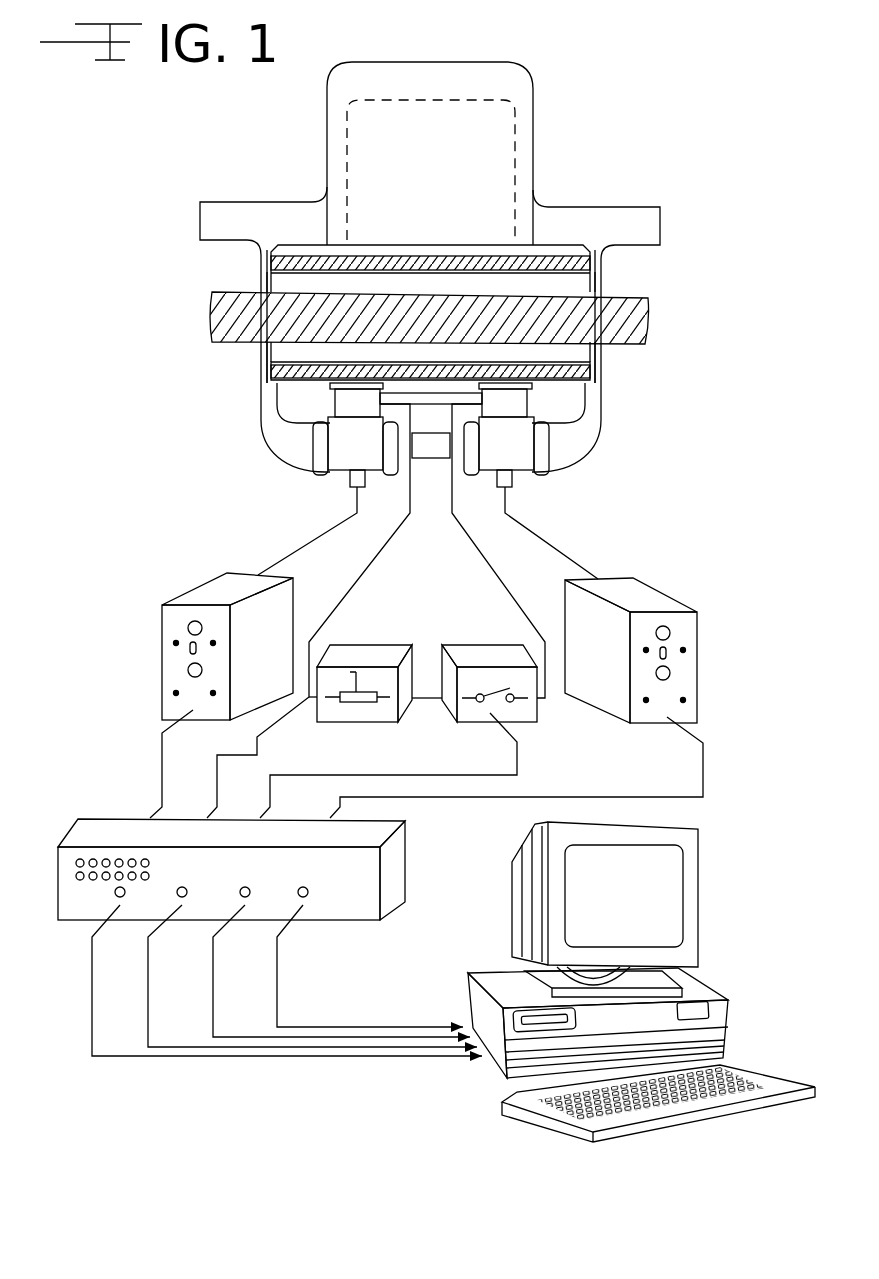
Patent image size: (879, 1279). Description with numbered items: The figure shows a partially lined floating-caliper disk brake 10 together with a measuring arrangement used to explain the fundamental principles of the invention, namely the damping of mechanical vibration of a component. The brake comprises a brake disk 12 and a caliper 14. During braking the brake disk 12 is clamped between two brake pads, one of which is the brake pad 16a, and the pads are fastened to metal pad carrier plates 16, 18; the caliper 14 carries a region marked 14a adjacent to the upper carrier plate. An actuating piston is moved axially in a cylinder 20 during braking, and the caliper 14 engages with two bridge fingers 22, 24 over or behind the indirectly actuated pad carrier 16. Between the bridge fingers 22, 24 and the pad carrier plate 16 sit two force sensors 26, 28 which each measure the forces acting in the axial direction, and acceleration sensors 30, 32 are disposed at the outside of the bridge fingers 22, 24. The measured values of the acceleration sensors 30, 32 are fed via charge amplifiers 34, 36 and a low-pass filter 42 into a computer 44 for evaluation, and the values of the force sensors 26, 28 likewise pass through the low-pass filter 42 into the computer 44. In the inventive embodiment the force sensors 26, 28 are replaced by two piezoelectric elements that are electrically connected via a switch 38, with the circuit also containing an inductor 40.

The floating-caliper disk brake 10 is at (651, 121).
The brake disk 12 is at (645, 318).
The caliper 14 is at (605, 288).
The upper bearing surface 14a is at (278, 281).
The pad carrier plate 16 is at (575, 375).
The brake pad 16a is at (283, 353).
The pad carrier plate 18 is at (270, 258).
The cylinder 20 is at (515, 157).
The bridge finger 22 is at (553, 467).
The bridge finger 24 is at (297, 458).
The force sensor 26 is at (513, 405).
The force sensor 28 is at (343, 402).
The acceleration sensor 30 is at (508, 483).
The acceleration sensor 32 is at (350, 478).
The charge amplifier 34 is at (653, 590).
The charge amplifier 36 is at (188, 592).
The switch 38 is at (488, 645).
The inductor 40 is at (392, 645).
The low-pass filter 42 is at (118, 818).
The computer 44 is at (470, 985).